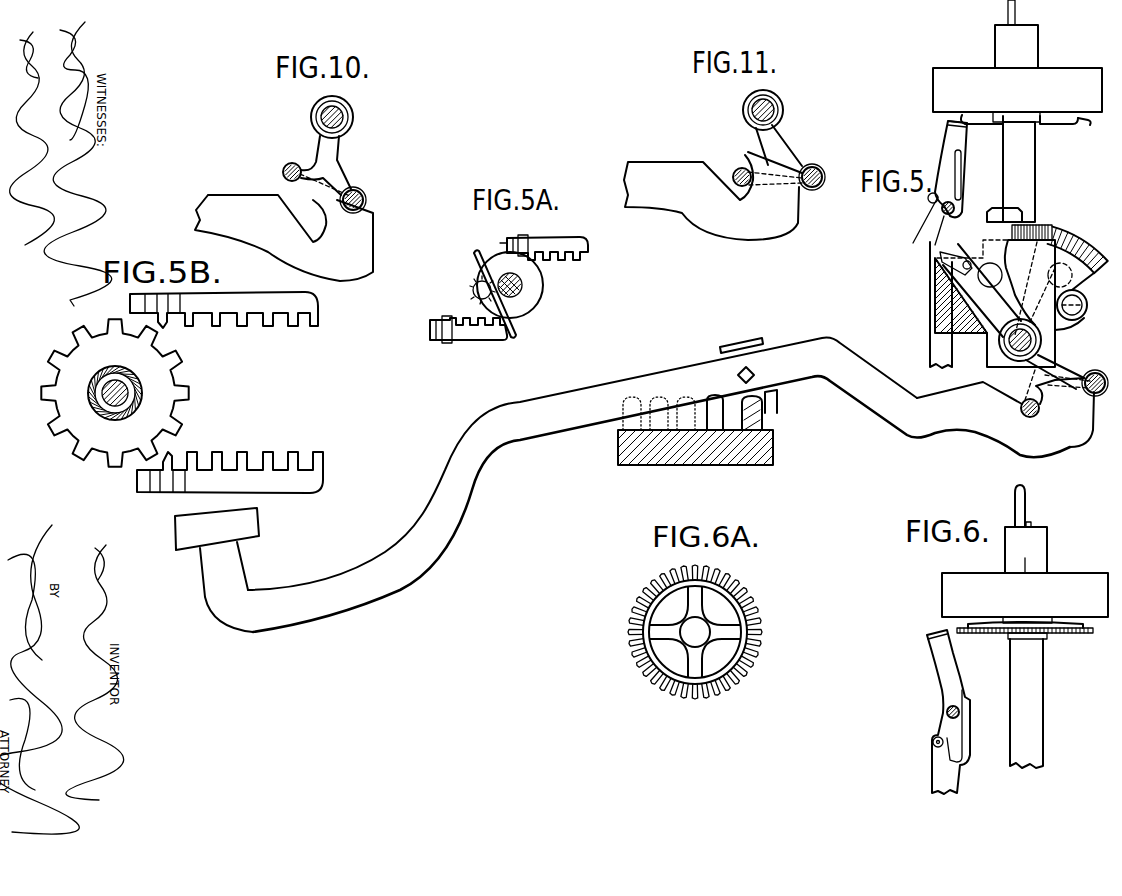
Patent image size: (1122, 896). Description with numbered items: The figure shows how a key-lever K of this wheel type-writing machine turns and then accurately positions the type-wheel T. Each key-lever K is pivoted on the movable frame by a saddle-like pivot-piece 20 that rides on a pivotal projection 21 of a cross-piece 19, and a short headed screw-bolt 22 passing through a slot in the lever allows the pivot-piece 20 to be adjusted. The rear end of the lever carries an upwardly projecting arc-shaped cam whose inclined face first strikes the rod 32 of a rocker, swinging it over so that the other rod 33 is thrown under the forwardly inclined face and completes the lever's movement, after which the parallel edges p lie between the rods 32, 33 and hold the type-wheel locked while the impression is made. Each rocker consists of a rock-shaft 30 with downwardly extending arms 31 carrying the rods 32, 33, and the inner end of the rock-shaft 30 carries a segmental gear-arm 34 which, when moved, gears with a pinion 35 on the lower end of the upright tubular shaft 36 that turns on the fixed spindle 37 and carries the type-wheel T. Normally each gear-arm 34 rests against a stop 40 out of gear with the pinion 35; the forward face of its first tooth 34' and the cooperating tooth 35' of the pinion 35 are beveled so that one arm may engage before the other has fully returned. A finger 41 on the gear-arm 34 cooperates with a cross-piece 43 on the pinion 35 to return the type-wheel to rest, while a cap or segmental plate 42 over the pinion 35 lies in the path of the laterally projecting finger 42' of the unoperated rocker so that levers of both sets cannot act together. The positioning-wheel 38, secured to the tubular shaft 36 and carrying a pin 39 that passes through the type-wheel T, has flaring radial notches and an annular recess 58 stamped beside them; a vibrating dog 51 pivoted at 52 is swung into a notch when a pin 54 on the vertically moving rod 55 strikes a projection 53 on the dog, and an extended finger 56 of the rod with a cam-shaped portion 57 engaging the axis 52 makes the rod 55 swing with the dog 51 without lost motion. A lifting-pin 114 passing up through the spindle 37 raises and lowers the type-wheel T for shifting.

In FIG. 5, the cross-piece 19 is at (676, 466).
In FIG. 5, the pivot-piece 20 is at (741, 340).
In FIG. 5, the pivotal projection 21 is at (700, 422).
In FIG. 5, the screw-bolt 22 is at (752, 369).
In FIG. 10, the rock-shaft 30 is at (345, 117).
In FIG. 11, the rock-shaft 30 is at (776, 110).
In FIG. 5, the rock-shaft 30 is at (1000, 345).
In FIG. 10, the arms 31 is at (328, 165).
In FIG. 11, the arms 31 is at (780, 145).
In FIG. 5, the arms 31 is at (1057, 372).
In FIG. 10, the rod 32 is at (360, 195).
In FIG. 11, the rod 32 is at (822, 177).
In FIG. 5, the rod 32 is at (1102, 383).
In FIG. 10, the rod 33 is at (288, 164).
In FIG. 11, the rod 33 is at (762, 176).
In FIG. 5, the rod 33 is at (1024, 402).
In FIG. 5A, the segmental gear-arm 34 is at (509, 288).
In FIG. 5B, the segmental gear-arm 34 is at (226, 392).
In FIG. 5, the segmental gear-arm 34 is at (1025, 297).
In FIG. 5B, the first tooth 34' is at (172, 388).
In FIG. 5A, the pinion 35 is at (474, 290).
In FIG. 5B, the pinion 35 is at (123, 345).
In FIG. 5B, the cooperating tooth 35' is at (132, 444).
In FIG. 5B, the tubular shaft 36 is at (142, 391).
In FIG. 6, the tubular shaft 36 is at (1026, 626).
In FIG. 5, the tubular shaft 36 is at (1019, 172).
In FIG. 5B, the spindle 37 is at (88, 393).
In FIG. 6A, the positioning-wheel 38 is at (695, 632).
In FIG. 6, the positioning-wheel 38 is at (1025, 634).
In FIG. 5, the positioning-wheel 38 is at (1050, 122).
In FIG. 5, the pin 39 is at (1016, 34).
In FIG. 5, the stop 40 is at (1087, 307).
In FIG. 5A, the finger 41 is at (425, 334).
In FIG. 5B, the finger 41 is at (117, 395).
In FIG. 5, the finger 41 is at (935, 258).
In FIG. 5A, the cap or segmental plate 42 is at (510, 285).
In FIG. 5, the cap or segmental plate 42 is at (1034, 222).
In FIG. 5A, the laterally-projecting finger 42' is at (496, 291).
In FIG. 5, the laterally-projecting finger 42' is at (972, 251).
In FIG. 5A, the cross-piece 43 is at (475, 258).
In FIG. 5, the cross-piece 43 is at (1004, 216).
In FIG. 6, the vibrating dog 51 is at (948, 712).
In FIG. 5, the vibrating dog 51 is at (951, 169).
In FIG. 6, the pivot / axis 52 is at (942, 724).
In FIG. 5, the pivot / axis 52 is at (940, 212).
In FIG. 6, the projection 53 is at (945, 712).
In FIG. 5, the projection 53 is at (928, 199).
In FIG. 6, the pin 54 is at (933, 744).
In FIG. 5, the pin 54 is at (935, 203).
In FIG. 6, the vertically-moving rod 55 is at (945, 773).
In FIG. 5, the vertically-moving rod 55 is at (932, 221).
In FIG. 6, the finger 56 is at (970, 737).
In FIG. 5, the finger 56 is at (972, 175).
In FIG. 6, the cam-shaped portion 57 is at (962, 762).
In FIG. 5, the cam-shaped portion 57 is at (958, 216).
In FIG. 5, the annular recess 58 is at (1084, 130).
In FIG. 5B, the lifting-pin 114 is at (110, 410).
In FIG. 6, the type-wheel T is at (1025, 595).
In FIG. 5, the type-wheel T is at (1017, 90).
In FIG. 5, the key-lever K is at (635, 485).
In FIG. 5, the foot f is at (217, 529).
In FIG. 10, the parallel edges p is at (290, 236).
In FIG. 11, the parallel edges p is at (719, 190).
In FIG. 5, the parallel edges p is at (1012, 405).